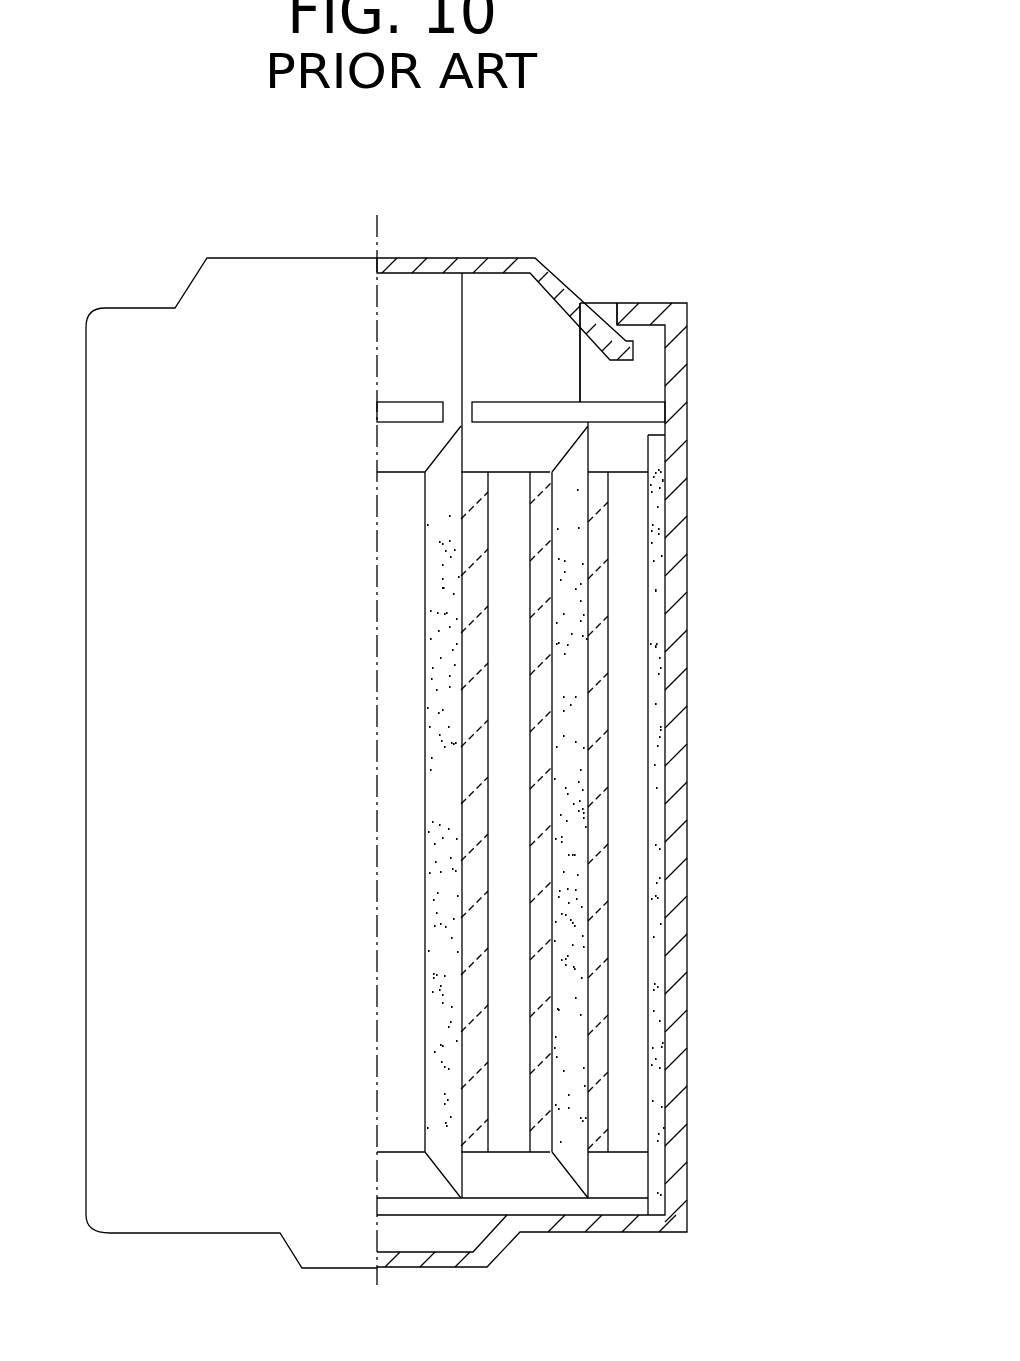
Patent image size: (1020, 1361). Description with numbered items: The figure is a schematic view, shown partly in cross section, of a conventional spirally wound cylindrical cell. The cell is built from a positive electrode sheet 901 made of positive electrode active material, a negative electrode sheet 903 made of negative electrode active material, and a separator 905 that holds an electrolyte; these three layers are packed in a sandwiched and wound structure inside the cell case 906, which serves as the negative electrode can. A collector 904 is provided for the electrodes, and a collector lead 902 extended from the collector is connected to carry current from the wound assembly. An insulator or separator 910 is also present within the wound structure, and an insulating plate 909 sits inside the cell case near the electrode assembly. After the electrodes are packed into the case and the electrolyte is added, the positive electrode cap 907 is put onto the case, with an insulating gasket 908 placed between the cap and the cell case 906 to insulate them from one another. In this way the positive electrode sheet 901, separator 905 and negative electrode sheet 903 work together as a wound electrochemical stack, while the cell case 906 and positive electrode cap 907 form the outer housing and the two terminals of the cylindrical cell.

The positive electrode sheet 901 is at (568, 665).
The collector lead 902 is at (462, 325).
The negative electrode sheet 903 is at (650, 883).
The collector 904 is at (662, 993).
The separator 905 is at (600, 798).
The cell case 906 is at (507, 1235).
The positive electrode cap 907 is at (479, 258).
The insulating gasket 908 is at (650, 372).
The insulating plate 909 is at (618, 1208).
The insulator or separator 910 is at (549, 568).